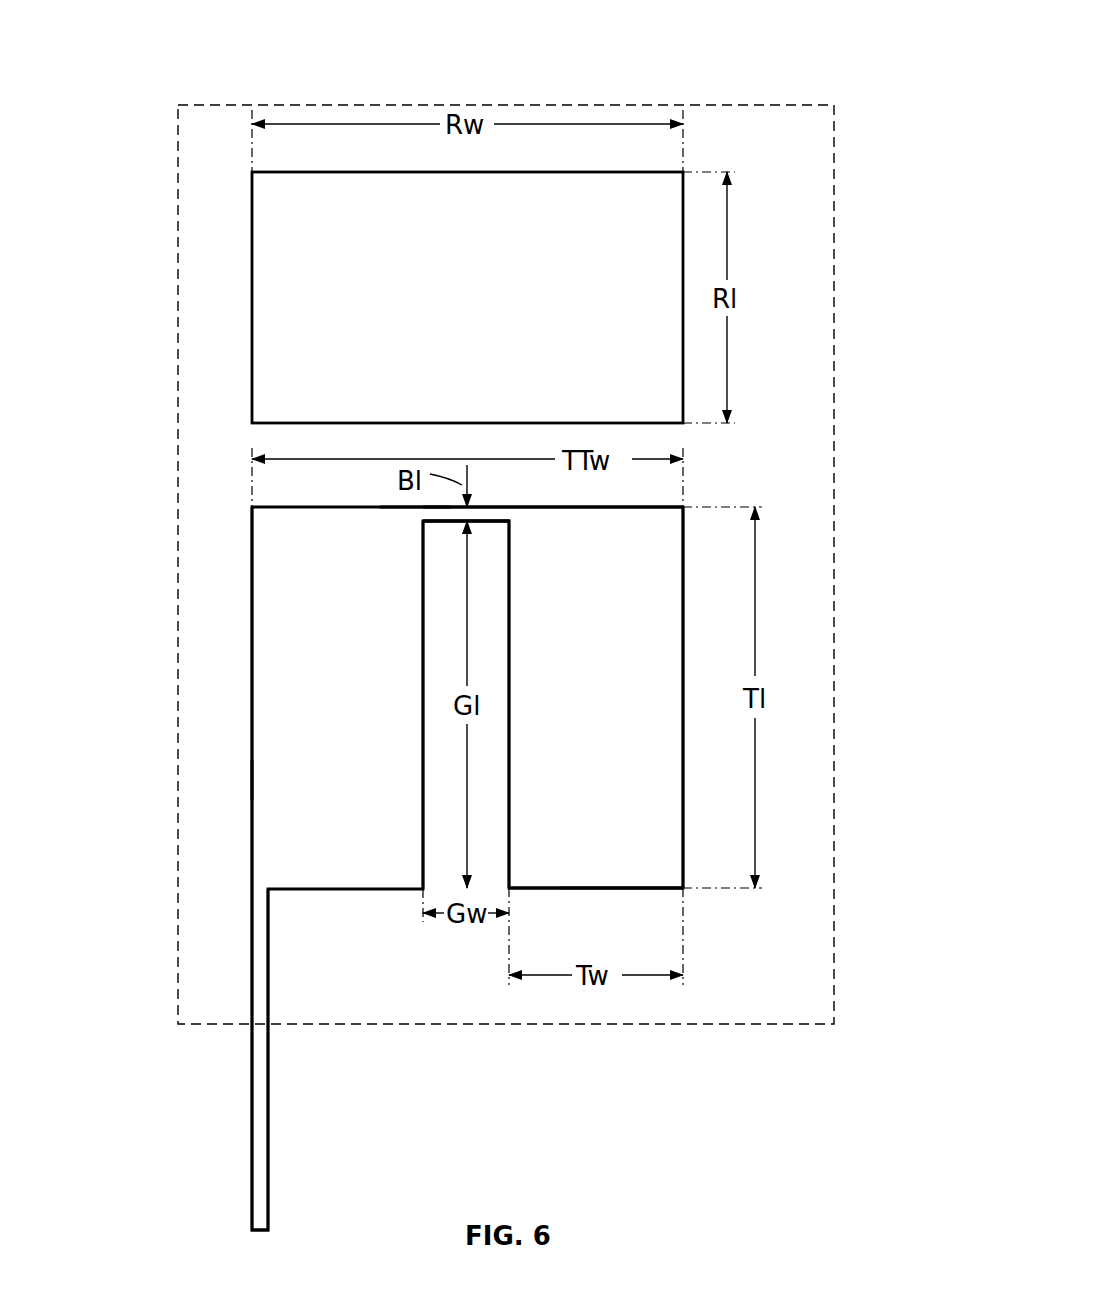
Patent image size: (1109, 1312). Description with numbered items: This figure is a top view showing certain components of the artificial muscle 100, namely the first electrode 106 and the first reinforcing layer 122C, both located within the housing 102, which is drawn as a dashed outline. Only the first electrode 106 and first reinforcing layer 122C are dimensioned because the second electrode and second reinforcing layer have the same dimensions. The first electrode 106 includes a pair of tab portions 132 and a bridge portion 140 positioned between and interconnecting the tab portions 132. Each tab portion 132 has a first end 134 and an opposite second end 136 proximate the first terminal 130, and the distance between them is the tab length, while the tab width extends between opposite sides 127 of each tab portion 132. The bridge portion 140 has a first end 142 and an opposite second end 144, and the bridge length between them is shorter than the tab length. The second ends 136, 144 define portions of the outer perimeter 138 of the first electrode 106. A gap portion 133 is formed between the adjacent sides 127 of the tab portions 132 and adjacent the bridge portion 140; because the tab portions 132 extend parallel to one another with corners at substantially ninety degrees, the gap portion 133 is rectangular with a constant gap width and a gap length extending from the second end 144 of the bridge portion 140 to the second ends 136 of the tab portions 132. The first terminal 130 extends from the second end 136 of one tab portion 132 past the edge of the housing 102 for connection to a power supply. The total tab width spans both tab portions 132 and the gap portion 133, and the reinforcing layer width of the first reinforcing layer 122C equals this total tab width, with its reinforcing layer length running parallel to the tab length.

The artificial muscle 100 is at (830, 46).
The housing 102 is at (160, 182).
The first reinforcing layer 122C is at (544, 168).
The first electrode 106 is at (684, 992).
The first terminal 130 is at (251, 1125).
The tab portions 132 is at (243, 818).
The gap portion 133 is at (454, 636).
The first end 134 is at (604, 506).
The second end 136 is at (620, 891).
The outer perimeter 138 is at (590, 886).
The bridge portion 140 is at (422, 506).
The first end 142 is at (486, 506).
The second end 144 is at (446, 522).
The sides 127 is at (251, 788).